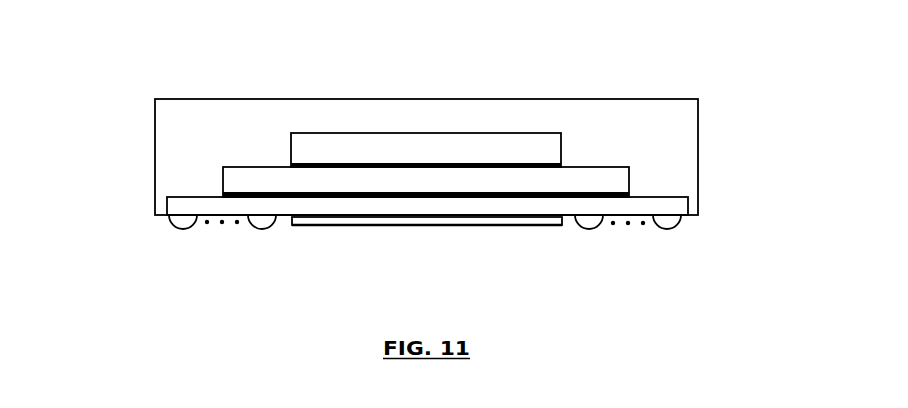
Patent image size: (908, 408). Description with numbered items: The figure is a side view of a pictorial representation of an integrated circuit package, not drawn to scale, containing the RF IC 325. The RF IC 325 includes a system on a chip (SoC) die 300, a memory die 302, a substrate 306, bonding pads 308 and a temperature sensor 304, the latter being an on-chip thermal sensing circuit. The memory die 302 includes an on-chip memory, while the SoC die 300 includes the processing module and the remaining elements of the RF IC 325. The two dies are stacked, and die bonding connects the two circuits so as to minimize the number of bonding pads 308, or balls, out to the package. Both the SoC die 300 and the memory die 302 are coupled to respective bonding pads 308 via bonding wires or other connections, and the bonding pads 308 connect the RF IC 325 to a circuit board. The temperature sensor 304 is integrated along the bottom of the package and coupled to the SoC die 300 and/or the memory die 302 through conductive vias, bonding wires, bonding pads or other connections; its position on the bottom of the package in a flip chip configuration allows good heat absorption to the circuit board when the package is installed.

The RF IC 325 is at (663, 73).
The system on a chip (SoC) die 300 is at (468, 158).
The memory die 302 is at (426, 182).
The temperature sensor 304 is at (408, 225).
The substrate 306 is at (688, 197).
The bonding pads 308 is at (232, 251).